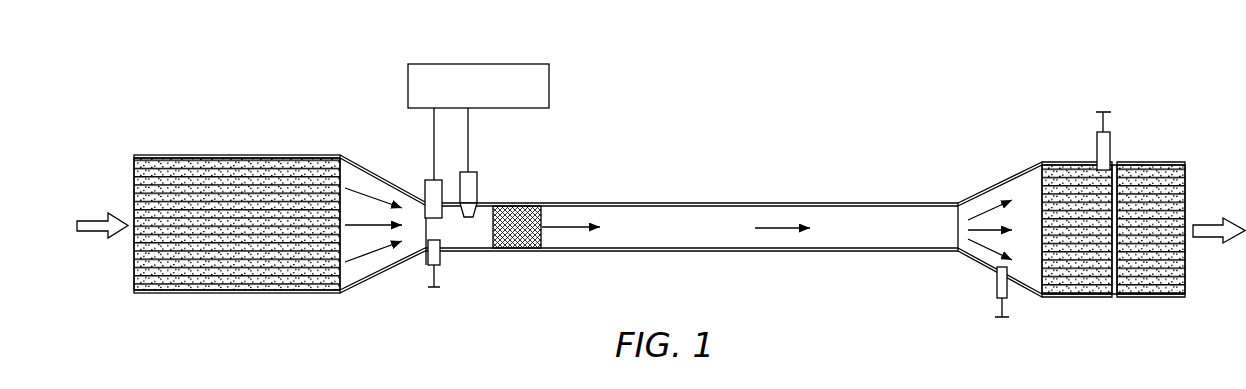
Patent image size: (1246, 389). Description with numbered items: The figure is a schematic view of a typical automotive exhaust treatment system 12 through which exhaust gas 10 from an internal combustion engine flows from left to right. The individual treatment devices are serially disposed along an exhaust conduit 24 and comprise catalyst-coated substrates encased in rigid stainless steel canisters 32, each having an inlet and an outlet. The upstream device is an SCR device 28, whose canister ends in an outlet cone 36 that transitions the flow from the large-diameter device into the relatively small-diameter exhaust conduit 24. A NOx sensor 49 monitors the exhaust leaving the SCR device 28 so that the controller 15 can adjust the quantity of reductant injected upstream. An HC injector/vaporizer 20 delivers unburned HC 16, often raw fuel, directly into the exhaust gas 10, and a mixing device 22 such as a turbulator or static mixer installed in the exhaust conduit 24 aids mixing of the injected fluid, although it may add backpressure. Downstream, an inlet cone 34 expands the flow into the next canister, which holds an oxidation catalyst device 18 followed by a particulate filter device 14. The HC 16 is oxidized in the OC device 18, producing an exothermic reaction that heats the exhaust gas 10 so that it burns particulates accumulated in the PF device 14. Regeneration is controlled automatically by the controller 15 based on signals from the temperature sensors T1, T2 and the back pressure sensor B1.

The exhaust treatment system 12 is at (236, 90).
The exhaust gas 10 is at (103, 216).
The selective catalytic reduction device 28 is at (199, 153).
The canister 32 is at (210, 294).
The outlet cone 36 is at (365, 280).
The exhaust conduit 24 is at (722, 203).
The inlet cone 34 is at (1004, 182).
The oxidation catalyst device 18 is at (1067, 160).
The particulate filter device 14 is at (1148, 160).
The mixing device 22 is at (542, 216).
The controller 15 is at (557, 84).
The NOx sensor 49 is at (425, 183).
The HC injector/vaporizer 20 is at (479, 184).
The unburned HC 16 is at (468, 218).
The temperature sensor T1 is at (443, 268).
The temperature sensor T2 is at (1094, 130).
The back pressure sensor B1 is at (992, 301).